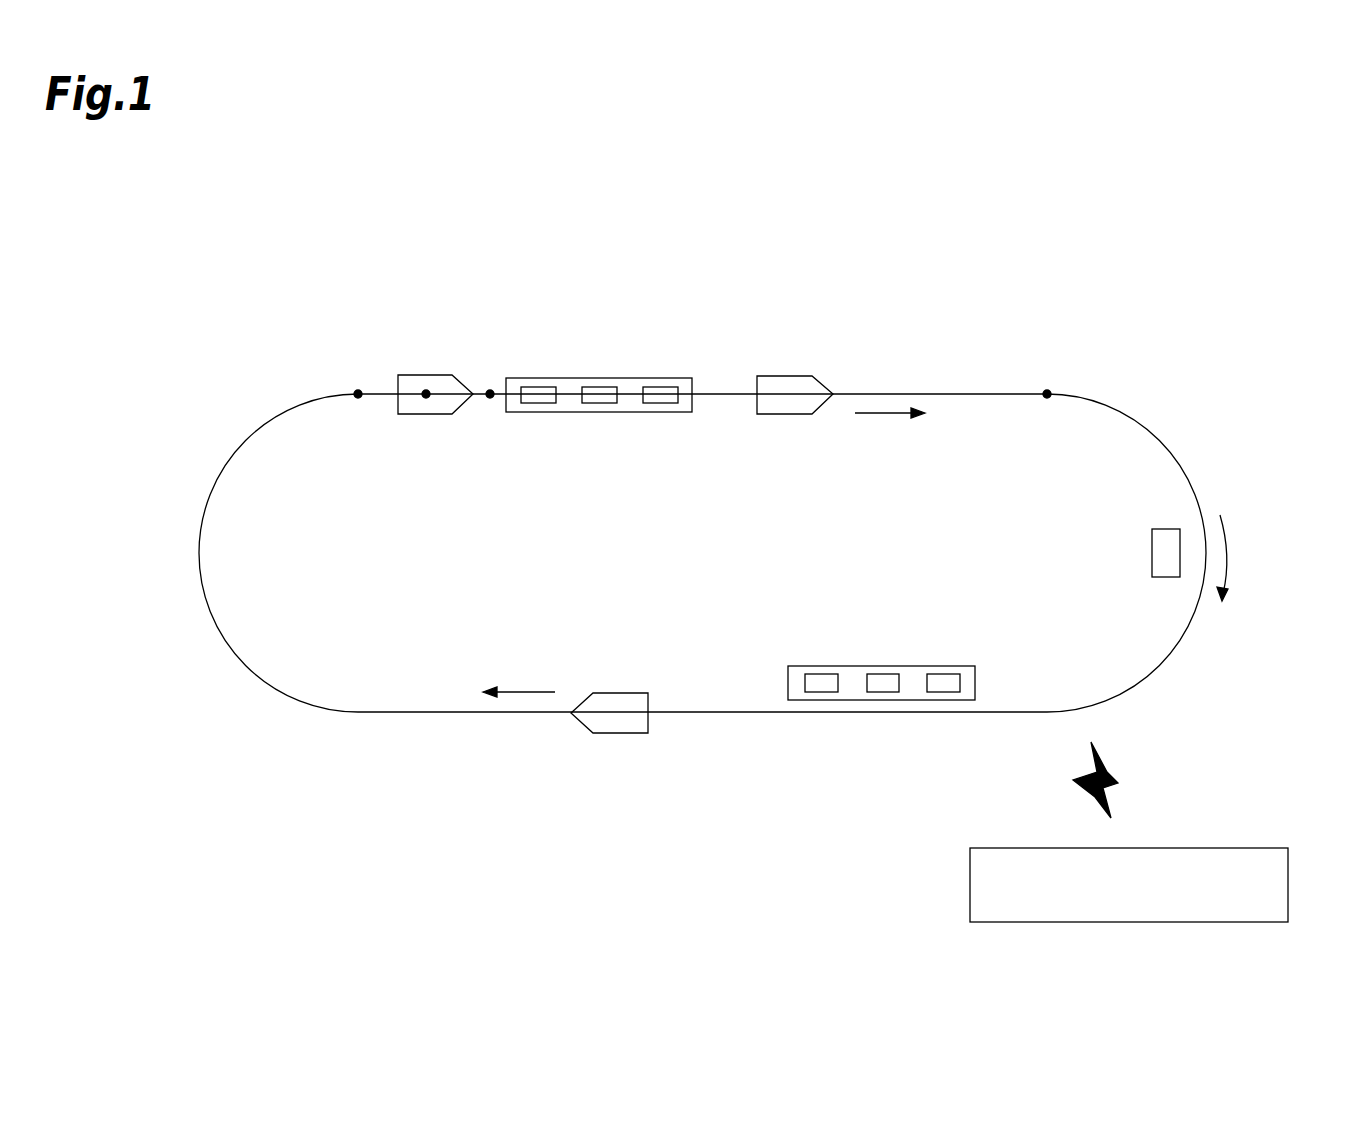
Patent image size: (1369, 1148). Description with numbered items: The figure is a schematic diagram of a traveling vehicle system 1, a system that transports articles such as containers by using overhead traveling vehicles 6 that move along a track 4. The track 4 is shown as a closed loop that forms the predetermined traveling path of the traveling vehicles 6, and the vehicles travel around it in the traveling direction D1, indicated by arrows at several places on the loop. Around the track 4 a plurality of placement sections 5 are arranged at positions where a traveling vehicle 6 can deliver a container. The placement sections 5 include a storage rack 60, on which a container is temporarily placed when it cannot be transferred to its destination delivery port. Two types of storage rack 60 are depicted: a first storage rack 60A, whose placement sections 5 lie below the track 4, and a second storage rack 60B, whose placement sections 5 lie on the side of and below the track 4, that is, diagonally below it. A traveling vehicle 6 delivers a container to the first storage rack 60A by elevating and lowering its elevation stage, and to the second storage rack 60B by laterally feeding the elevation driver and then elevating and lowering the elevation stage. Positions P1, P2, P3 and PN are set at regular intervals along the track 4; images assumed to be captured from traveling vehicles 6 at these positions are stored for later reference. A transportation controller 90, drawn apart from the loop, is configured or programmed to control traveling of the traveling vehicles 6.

The traveling vehicle system 1 is at (898, 320).
The track 4 is at (200, 553).
The placement section 5 is at (540, 405).
The traveling vehicle 6 is at (428, 390).
The storage rack 60 is at (740, 504).
The first storage rack 60A is at (598, 378).
The second storage rack 60B is at (882, 666).
The transportation controller 90 is at (1288, 882).
The position P1 is at (358, 400).
The position P2 is at (426, 400).
The position P3 is at (490, 400).
The position PN is at (1047, 400).
The traveling direction D1 is at (878, 552).